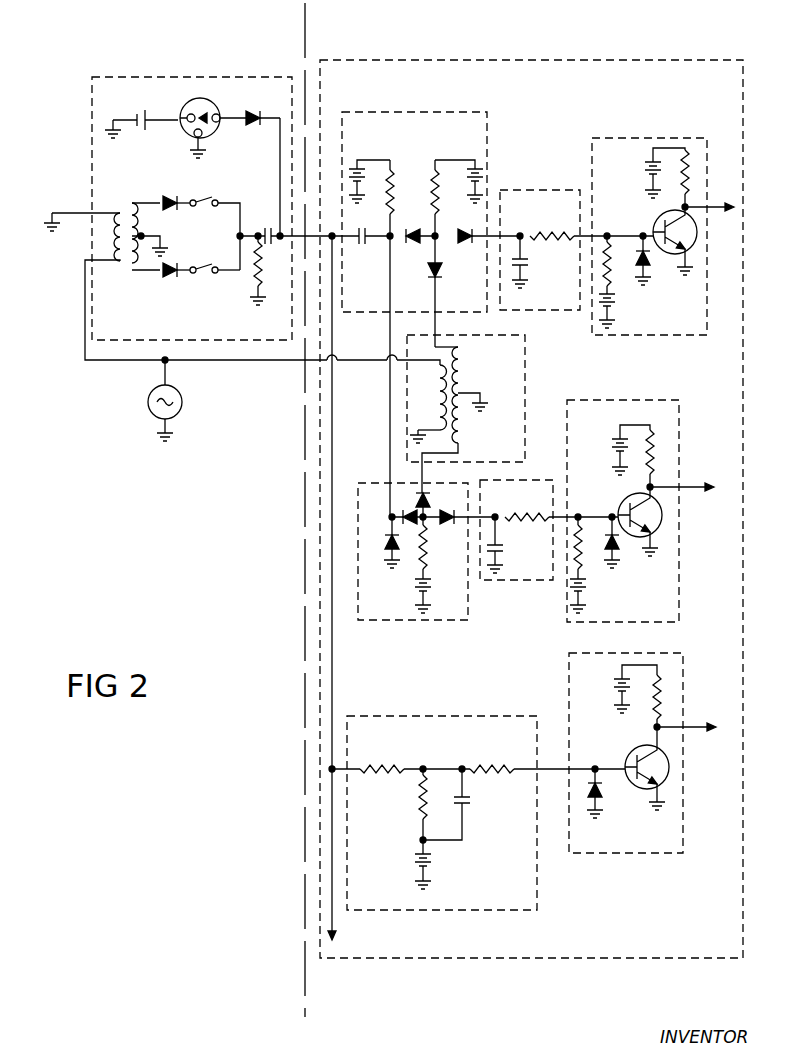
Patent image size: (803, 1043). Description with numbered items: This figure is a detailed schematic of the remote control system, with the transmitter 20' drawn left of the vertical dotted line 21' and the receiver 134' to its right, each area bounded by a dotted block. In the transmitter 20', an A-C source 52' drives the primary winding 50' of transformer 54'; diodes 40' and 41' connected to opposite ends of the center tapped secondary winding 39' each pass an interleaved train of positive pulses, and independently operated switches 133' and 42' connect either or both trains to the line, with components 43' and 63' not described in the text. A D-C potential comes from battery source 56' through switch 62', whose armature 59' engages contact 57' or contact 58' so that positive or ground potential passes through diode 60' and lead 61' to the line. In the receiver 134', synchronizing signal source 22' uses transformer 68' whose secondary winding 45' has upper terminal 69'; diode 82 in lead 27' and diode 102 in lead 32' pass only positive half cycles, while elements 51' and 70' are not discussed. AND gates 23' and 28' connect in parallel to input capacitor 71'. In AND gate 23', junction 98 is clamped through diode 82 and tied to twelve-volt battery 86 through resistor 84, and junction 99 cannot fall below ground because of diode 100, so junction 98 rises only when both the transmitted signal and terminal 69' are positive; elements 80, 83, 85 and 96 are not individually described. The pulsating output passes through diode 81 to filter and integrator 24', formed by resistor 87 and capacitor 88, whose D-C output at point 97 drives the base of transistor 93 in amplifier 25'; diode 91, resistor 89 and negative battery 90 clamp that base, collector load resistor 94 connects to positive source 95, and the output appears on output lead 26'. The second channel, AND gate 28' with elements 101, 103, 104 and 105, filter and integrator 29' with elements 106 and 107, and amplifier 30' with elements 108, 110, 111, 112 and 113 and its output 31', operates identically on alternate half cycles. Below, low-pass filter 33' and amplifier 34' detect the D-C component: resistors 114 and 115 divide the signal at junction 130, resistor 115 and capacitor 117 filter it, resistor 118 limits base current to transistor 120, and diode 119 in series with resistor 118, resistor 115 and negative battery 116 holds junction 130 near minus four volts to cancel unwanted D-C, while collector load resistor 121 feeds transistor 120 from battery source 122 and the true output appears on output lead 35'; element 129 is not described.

The transmitter 20' is at (192, 193).
The vertical dotted line 21' is at (328, 510).
The receiver 134' is at (531, 494).
The battery source 56' is at (136, 115).
The contact 57' is at (185, 112).
The armature 59' is at (225, 99).
The contact 58' is at (178, 143).
The switch 62' is at (238, 143).
The diode 60' is at (252, 103).
The lead 61' is at (258, 177).
The transformer 54' is at (91, 226).
The primary winding 50' is at (262, 310).
The center tapped secondary winding 39' is at (154, 236).
The diode 40' is at (165, 190).
The switch 133' is at (215, 233).
The diode 41' is at (171, 283).
The switch 42' is at (215, 284).
The capacitor 63' is at (259, 220).
The resistor 43' is at (269, 270).
The A-C source 52' is at (183, 399).
The AND gate 23' is at (414, 196).
The input capacitor 71' is at (356, 222).
The junction 99 is at (388, 244).
The resistor 83 is at (396, 186).
The battery 85 is at (354, 163).
The resistor 84 is at (430, 198).
The positive 12-volt battery 86 is at (472, 162).
The diode 80 is at (410, 230).
The junction 98 is at (433, 244).
The diode 81 is at (462, 230).
The diode 82 is at (443, 274).
The lead 27' is at (453, 332).
The filter and integrator circuit 24' is at (540, 238).
The point 97 is at (519, 232).
The resistor 87 is at (560, 230).
The capacitor 88 is at (530, 263).
The amplifier 25' is at (649, 223).
The junction 96 is at (612, 226).
The resistor 89 is at (613, 270).
The negative battery source 90 is at (618, 298).
The diode 91 is at (648, 262).
The transistor 93 is at (660, 225).
The collector electrode load resistor 94 is at (671, 179).
The positive voltage source 95 is at (645, 160).
The output lead 26' is at (711, 193).
The synchronizing signal source 22' is at (487, 398).
The secondary winding 45' is at (477, 395).
The terminal 69' is at (482, 350).
The primary winding 51' is at (428, 397).
The transformer 68' is at (432, 440).
The winding terminal 70' is at (459, 463).
The lead 32' is at (440, 478).
The AND gate 28' is at (413, 564).
The diode 100 is at (388, 545).
The diode 101 is at (413, 503).
The diode 102 is at (426, 498).
The diode 103 is at (442, 524).
The resistor 104 is at (428, 552).
The battery 105 is at (415, 583).
The filter and integrator circuit 29' is at (516, 545).
The resistor 106 is at (525, 512).
The capacitor 107 is at (502, 548).
The amplifier 30' is at (605, 521).
The resistor 108 is at (600, 548).
The diode 110 is at (617, 548).
The transistor 111 is at (630, 505).
The resistor 112 is at (655, 435).
The battery 113 is at (615, 452).
The output lead 31' is at (683, 474).
The low-pass filter 33' is at (442, 826).
The resistor 114 is at (385, 763).
The junction 130 is at (424, 766).
The resistor 118 is at (498, 765).
The resistor 115 is at (418, 800).
The capacitor 117 is at (465, 805).
The negative battery source 116 is at (418, 862).
The output lead 129 is at (334, 925).
The amplifier 34' is at (626, 769).
The diode 119 is at (603, 790).
The transistor 120 is at (628, 755).
The collector load resistor 121 is at (660, 678).
The battery source 122 is at (618, 685).
The output lead 35' is at (688, 714).